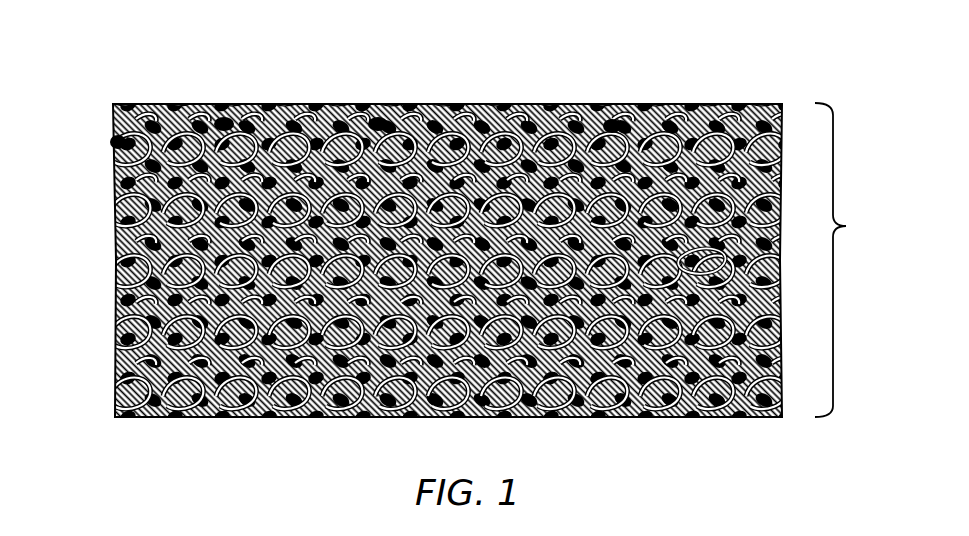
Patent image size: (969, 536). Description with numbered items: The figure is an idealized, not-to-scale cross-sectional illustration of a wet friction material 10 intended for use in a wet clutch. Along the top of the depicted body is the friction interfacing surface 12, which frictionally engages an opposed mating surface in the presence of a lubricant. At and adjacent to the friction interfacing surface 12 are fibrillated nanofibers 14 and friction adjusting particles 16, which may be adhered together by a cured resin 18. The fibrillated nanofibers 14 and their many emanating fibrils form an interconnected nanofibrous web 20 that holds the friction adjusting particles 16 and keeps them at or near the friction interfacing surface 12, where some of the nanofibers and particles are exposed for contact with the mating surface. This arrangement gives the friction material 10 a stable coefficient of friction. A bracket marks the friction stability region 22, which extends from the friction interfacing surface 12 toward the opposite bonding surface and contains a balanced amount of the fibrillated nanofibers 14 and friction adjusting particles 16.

The wet friction material 10 is at (129, 82).
The friction interfacing surface 12 is at (716, 90).
The fibrillated nanofibers 14 is at (222, 118).
The friction adjusting particles 16 is at (378, 118).
The cured resin 18 is at (122, 370).
The nanofibrous web 20 is at (690, 260).
The friction stability region 22 is at (848, 226).